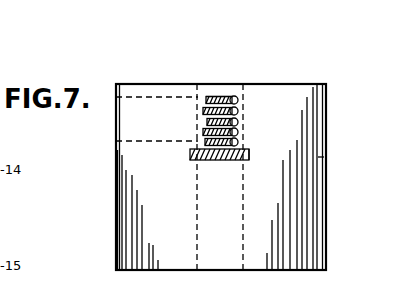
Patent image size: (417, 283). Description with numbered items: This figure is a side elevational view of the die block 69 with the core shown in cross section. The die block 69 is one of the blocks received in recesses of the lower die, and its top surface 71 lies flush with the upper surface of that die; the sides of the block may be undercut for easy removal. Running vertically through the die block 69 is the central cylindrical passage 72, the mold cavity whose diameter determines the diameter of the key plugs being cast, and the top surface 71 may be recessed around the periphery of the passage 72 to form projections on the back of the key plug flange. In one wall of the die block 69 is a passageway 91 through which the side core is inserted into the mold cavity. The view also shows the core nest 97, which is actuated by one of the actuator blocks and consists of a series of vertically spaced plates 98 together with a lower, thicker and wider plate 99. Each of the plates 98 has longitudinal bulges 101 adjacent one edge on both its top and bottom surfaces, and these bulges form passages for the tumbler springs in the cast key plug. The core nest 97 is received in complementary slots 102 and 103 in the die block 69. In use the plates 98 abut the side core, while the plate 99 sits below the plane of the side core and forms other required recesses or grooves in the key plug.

The die block 69 is at (322, 157).
The top surface of die block 71 is at (308, 83).
The central vertical cylindrical passage 72 is at (197, 207).
The passageway 91 is at (147, 108).
The core nest 97 is at (252, 116).
The vertically spaced plates 98 is at (203, 132).
The lower plate 99 is at (252, 162).
The longitudinal bulges 101 is at (233, 96).
The slot 102 is at (217, 97).
The slot 103 is at (218, 160).